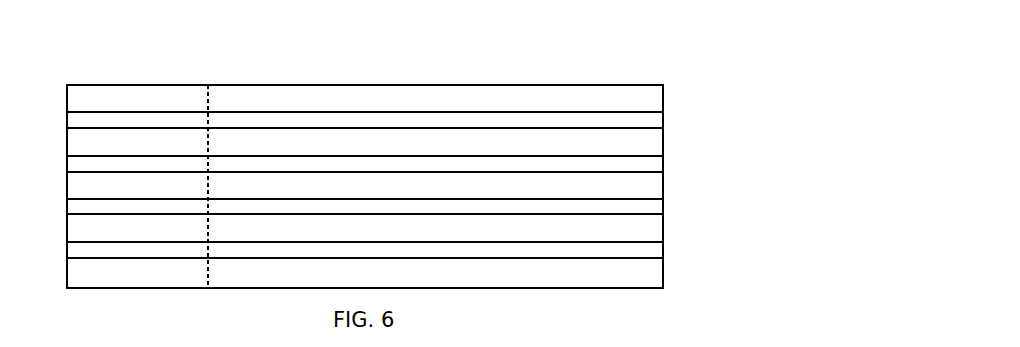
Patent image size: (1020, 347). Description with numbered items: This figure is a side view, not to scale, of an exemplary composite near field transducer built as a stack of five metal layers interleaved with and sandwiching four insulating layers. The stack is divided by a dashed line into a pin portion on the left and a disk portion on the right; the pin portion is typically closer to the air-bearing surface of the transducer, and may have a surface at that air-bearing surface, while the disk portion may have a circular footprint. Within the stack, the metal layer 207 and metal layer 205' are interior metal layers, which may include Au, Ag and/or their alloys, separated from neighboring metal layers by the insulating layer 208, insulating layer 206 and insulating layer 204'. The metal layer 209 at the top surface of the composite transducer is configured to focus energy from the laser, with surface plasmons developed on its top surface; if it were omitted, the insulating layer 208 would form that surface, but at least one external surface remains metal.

The insulating layer 204' is at (392, 222).
The metal layer 205' is at (338, 173).
The insulating layer 206 is at (663, 166).
The metal layer 207 is at (67, 139).
The insulating layer 208 is at (663, 115).
The metal layer 209 is at (67, 89).